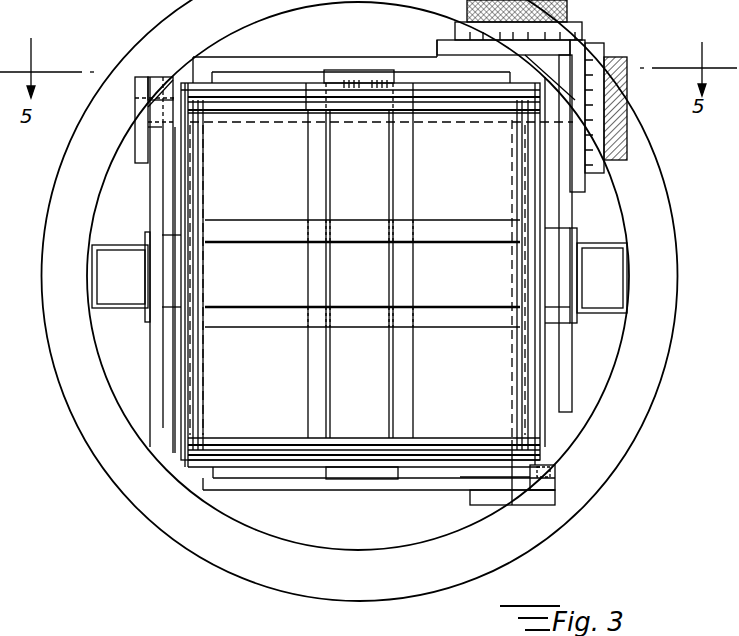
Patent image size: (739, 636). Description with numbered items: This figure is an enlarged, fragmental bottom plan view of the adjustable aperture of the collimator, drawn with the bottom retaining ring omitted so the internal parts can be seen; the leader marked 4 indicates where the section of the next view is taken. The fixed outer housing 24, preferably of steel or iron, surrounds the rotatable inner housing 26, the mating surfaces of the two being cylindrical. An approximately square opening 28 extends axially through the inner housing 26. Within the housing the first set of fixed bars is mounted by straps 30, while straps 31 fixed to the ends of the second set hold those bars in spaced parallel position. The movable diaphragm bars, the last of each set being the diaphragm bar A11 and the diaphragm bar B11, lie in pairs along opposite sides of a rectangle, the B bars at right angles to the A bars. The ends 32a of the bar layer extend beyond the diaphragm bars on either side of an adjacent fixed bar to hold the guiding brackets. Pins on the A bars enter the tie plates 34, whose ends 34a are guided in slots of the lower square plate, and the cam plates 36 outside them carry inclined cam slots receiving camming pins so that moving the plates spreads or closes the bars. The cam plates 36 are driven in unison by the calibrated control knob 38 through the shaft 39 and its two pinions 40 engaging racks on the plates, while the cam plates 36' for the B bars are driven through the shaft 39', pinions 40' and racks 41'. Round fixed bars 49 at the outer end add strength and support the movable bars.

The section indicator 4 is at (150, 104).
The outer housing 24 is at (672, 298).
The inner housing 26 is at (130, 380).
The square opening 28 is at (165, 362).
The straps 30 is at (185, 380).
The straps 31 is at (270, 100).
The end portions of layer 32a is at (375, 118).
The tie plates 34 is at (247, 83).
The ends of tie plates 34a is at (375, 83).
The cam plates 36 is at (355, 272).
The cam plates 36' is at (351, 58).
The control knob 38 is at (612, 57).
The shaft 39 is at (381, 280).
The shaft 39' is at (364, 280).
The pinions 40 is at (129, 120).
The pinions 40' is at (507, 458).
The racks 41' is at (497, 502).
The round fixed bars 49 is at (195, 181).
The diaphragm bar A11 is at (401, 349).
The diaphragm bar B11 is at (466, 235).